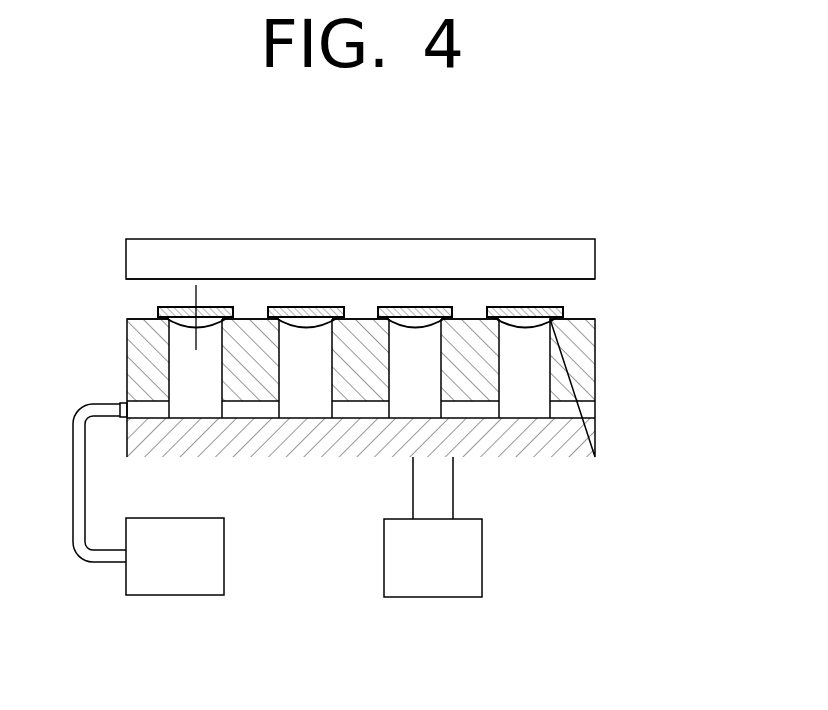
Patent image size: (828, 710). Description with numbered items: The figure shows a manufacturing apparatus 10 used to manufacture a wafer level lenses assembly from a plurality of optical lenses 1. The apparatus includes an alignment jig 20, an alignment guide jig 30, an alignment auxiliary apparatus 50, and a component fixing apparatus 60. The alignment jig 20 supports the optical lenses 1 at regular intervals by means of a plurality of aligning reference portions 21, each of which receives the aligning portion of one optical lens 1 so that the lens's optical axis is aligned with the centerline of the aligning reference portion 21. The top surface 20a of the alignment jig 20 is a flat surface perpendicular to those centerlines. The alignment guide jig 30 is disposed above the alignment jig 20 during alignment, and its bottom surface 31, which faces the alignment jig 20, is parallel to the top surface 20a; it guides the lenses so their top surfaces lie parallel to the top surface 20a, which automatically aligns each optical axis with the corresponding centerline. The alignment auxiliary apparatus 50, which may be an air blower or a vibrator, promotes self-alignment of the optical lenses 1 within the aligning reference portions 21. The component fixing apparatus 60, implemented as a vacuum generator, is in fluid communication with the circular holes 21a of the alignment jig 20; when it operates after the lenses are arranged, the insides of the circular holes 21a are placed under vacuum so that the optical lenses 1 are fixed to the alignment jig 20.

The manufacturing apparatus 10 is at (469, 171).
The alignment guide jig 30 is at (606, 254).
The bottom surface of alignment guide jig 31 is at (564, 279).
The optical lens 1 is at (576, 305).
The alignment jig 20 is at (374, 401).
The top surface of alignment jig 20a is at (143, 319).
The aligning reference portion 21 is at (552, 331).
The circular hole 21a is at (525, 404).
The alignment auxiliary apparatus 50 is at (495, 558).
The component fixing apparatus 60 is at (237, 553).